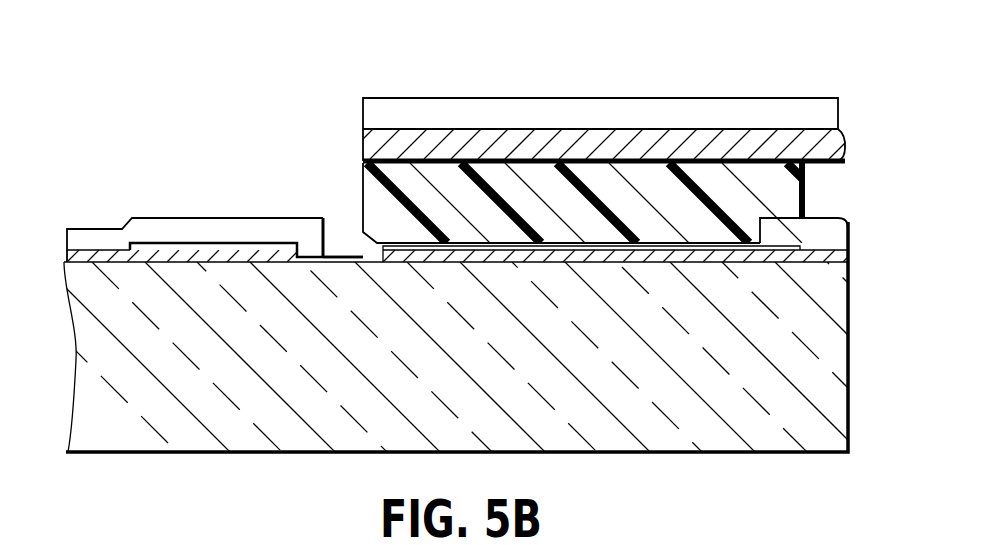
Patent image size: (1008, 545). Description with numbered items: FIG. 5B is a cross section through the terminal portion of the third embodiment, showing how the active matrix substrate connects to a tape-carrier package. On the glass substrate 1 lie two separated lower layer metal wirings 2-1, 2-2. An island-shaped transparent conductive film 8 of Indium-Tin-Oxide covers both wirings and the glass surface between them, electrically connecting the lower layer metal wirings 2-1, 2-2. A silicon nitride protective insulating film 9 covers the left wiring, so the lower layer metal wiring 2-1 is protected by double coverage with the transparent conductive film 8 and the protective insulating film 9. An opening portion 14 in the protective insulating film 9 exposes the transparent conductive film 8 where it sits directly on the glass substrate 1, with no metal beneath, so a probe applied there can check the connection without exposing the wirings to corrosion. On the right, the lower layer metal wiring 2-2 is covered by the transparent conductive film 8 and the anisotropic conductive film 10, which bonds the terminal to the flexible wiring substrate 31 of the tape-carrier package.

The glass substrate 1 is at (742, 437).
The lower layer metal wiring 2-1 is at (182, 253).
The lower layer metal wiring 2-2 is at (551, 248).
The transparent conductive film 8 is at (668, 248).
The protective insulating film 9 is at (297, 225).
The anisotropic conductive film 10 is at (443, 198).
The opening portion 14 is at (340, 247).
The flexible wiring substrate 31 is at (852, 97).